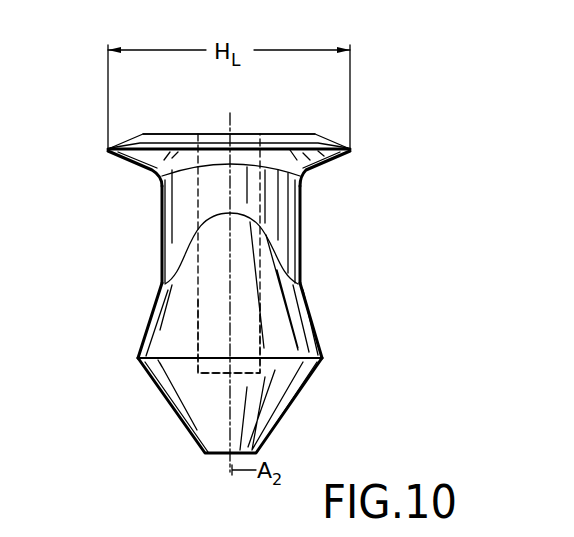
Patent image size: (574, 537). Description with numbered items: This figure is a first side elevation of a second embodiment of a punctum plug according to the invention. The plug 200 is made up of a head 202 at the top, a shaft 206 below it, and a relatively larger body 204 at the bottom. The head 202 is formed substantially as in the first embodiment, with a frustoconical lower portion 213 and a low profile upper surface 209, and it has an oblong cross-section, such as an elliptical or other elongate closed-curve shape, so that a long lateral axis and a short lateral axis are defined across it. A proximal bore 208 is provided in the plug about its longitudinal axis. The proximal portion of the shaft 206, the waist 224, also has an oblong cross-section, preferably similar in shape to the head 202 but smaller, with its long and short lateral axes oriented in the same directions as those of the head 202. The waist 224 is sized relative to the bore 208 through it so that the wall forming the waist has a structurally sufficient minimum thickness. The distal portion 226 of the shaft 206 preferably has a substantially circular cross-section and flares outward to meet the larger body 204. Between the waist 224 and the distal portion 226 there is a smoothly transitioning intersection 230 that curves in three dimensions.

The plug 200 is at (388, 42).
The head 202 is at (267, 143).
The body 204 is at (284, 413).
The shaft 206 is at (348, 166).
The proximal bore 208 is at (213, 305).
The low profile upper surface 209 is at (149, 136).
The frustoconical lower portion 213 is at (132, 163).
The waist 224 is at (313, 285).
The distal portion 226 is at (165, 332).
The intersection 230 is at (188, 243).